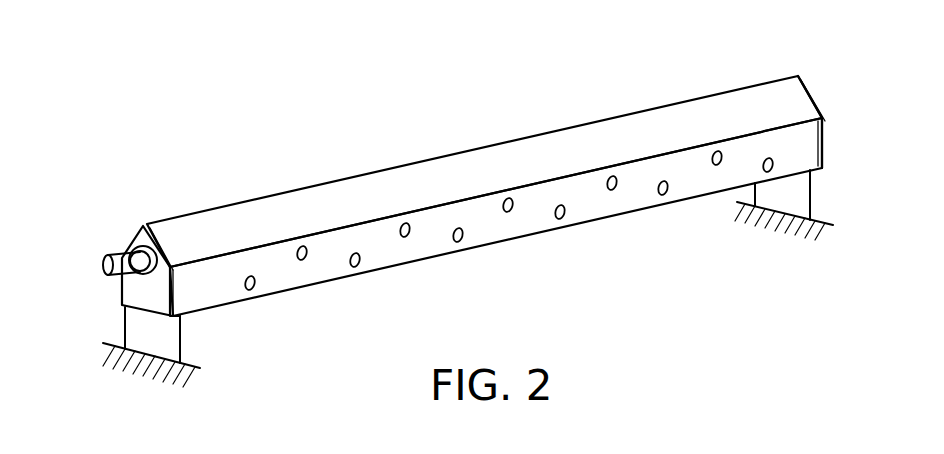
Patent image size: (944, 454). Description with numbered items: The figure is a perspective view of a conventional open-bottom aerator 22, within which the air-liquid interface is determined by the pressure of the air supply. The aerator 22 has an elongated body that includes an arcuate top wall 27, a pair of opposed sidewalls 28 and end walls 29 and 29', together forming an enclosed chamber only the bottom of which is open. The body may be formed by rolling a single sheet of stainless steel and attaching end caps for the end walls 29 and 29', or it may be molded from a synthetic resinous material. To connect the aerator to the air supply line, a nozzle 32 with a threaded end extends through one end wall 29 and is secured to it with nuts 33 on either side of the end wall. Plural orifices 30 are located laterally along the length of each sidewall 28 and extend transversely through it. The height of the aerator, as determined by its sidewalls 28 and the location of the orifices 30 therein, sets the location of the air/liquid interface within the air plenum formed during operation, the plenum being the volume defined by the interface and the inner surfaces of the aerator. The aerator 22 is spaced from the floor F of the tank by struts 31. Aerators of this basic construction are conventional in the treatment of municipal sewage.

The aerator 22 is at (467, 176).
The arcuate top wall 27 is at (677, 112).
The sidewall 28 is at (532, 228).
The end wall 29 is at (118, 271).
The end wall 29' is at (845, 122).
The orifices 30 is at (356, 268).
The struts 31 is at (182, 343).
The nozzle 32 is at (102, 262).
The nuts 33 is at (135, 247).
The floor F is at (193, 368).